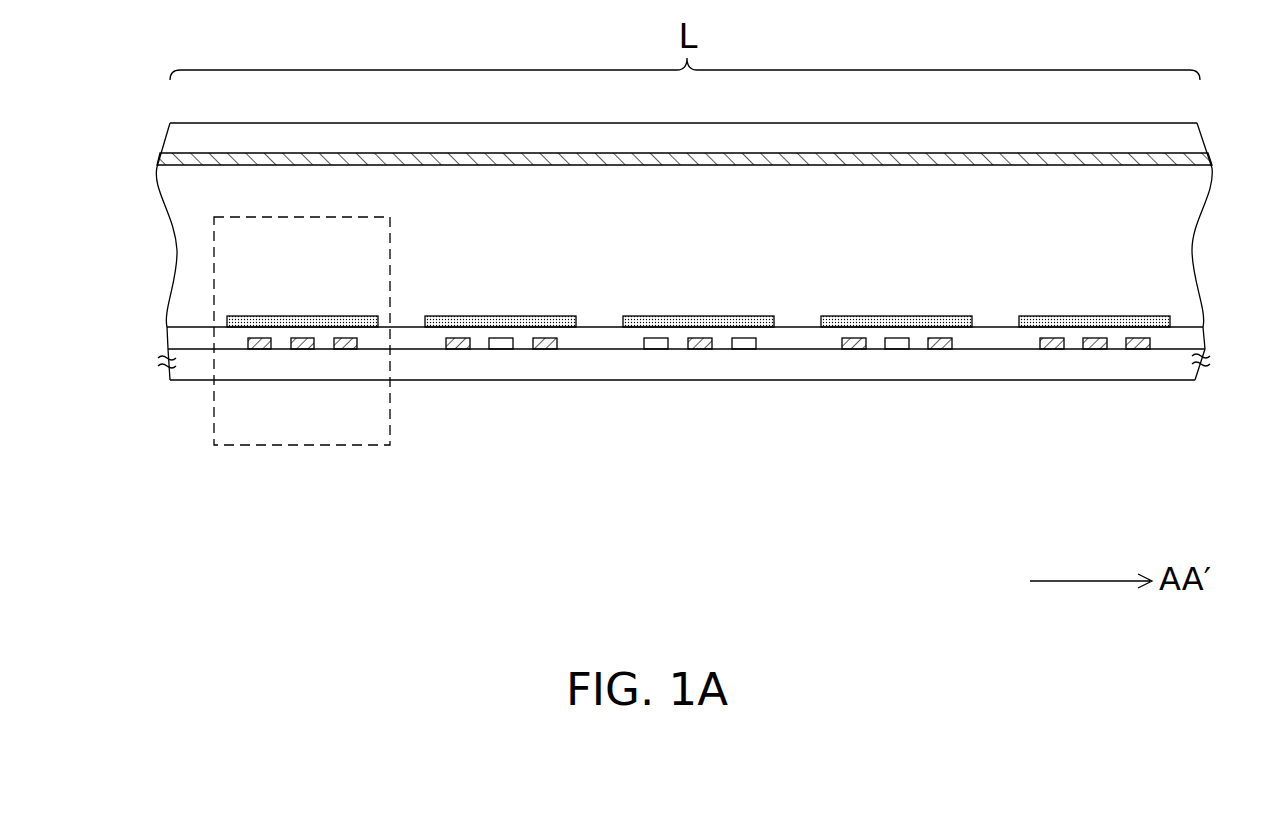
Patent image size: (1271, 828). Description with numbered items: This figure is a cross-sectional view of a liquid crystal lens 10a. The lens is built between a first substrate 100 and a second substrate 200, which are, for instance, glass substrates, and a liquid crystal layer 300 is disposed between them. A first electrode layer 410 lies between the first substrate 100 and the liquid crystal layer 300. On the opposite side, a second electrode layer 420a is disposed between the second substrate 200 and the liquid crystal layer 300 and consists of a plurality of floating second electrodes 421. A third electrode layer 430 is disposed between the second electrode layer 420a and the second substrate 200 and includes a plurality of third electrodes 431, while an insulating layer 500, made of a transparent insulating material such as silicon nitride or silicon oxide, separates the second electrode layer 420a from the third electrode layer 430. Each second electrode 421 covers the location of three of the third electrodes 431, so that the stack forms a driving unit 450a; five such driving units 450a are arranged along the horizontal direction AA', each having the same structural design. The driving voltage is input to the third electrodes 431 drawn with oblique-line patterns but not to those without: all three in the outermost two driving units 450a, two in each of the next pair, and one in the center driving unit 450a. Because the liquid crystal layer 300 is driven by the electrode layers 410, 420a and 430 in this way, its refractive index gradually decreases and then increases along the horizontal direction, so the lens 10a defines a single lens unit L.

The liquid crystal lens 10a is at (1240, 480).
The first substrate 100 is at (170, 142).
The first electrode layer 410 is at (157, 160).
The liquid crystal layer 300 is at (178, 250).
The insulating layer 500 is at (170, 338).
The second substrate 200 is at (168, 368).
The second electrode layer 420a is at (298, 243).
The second electrode 421 is at (310, 316).
The third electrode layer 430 is at (235, 460).
The third electrode 431 is at (256, 349).
The driving unit 450a is at (213, 418).